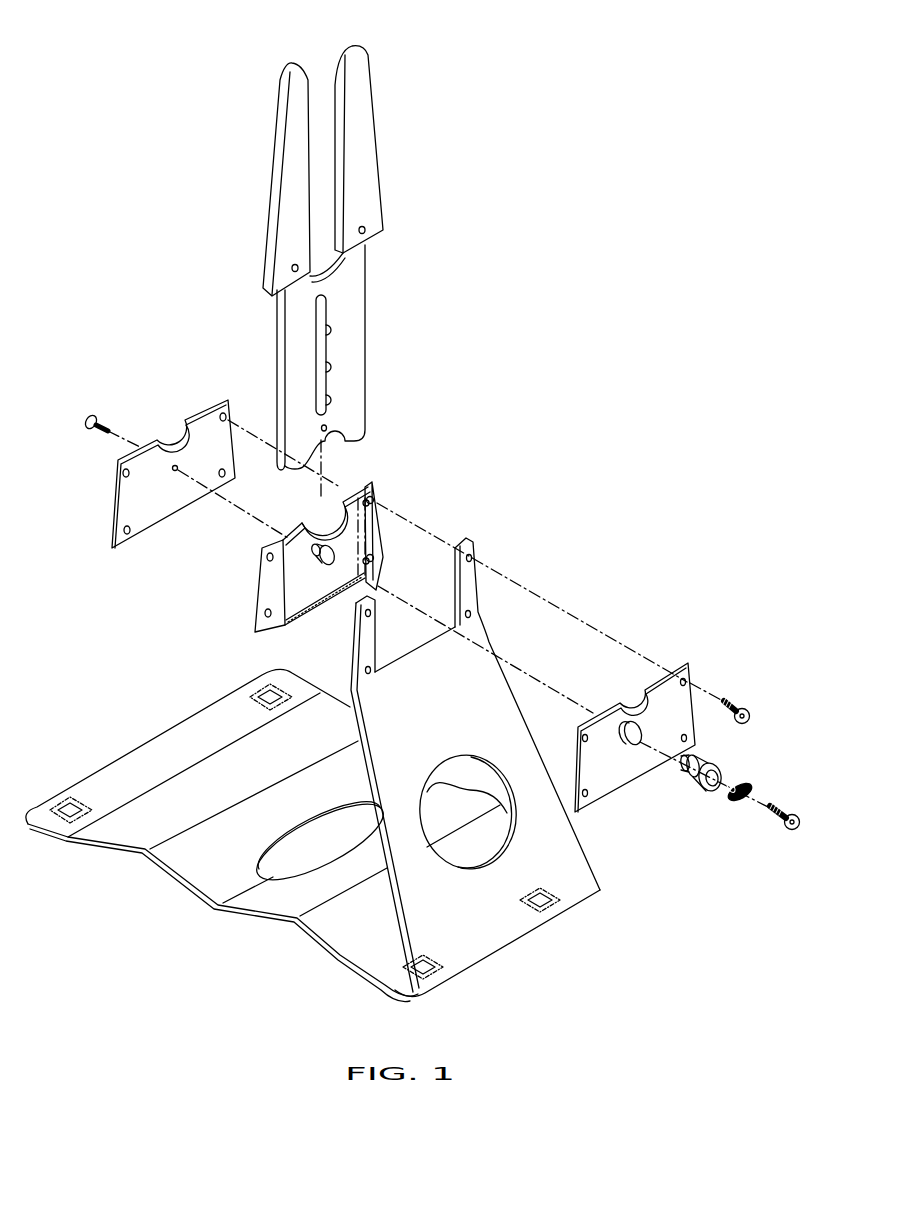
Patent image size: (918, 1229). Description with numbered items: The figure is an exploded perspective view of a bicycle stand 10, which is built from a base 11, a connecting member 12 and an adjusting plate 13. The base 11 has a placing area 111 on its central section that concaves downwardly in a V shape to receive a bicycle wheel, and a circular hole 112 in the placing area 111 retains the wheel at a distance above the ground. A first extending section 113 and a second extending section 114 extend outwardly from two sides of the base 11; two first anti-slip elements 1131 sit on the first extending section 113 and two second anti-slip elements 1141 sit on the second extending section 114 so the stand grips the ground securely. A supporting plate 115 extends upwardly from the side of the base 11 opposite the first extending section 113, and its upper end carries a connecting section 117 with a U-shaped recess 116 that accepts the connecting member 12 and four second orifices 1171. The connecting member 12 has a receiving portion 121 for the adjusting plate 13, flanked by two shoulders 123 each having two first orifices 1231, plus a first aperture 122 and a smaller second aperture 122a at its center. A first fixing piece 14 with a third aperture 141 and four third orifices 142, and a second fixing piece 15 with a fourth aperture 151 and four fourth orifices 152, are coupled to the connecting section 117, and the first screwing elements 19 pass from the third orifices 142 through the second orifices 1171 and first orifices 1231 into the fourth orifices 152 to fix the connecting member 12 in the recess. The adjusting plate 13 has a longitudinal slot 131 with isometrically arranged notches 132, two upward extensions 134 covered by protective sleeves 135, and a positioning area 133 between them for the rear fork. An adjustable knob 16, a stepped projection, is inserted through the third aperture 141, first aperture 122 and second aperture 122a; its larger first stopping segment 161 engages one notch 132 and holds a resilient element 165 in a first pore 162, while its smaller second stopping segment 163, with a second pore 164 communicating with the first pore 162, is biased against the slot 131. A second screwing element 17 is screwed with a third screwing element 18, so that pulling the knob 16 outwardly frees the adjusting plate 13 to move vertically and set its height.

The bicycle stand 10 is at (541, 452).
The base 11 is at (168, 732).
The placing area 111 is at (217, 888).
The circular hole 112 is at (327, 845).
The first extending section 113 is at (55, 825).
The first anti-slip elements 1131 is at (266, 690).
The second extending section 114 is at (403, 975).
The second anti-slip elements 1141 is at (560, 905).
The supporting plate 115 is at (488, 712).
The U-shaped recess 116 is at (415, 623).
The connecting section 117 is at (470, 585).
The second orifices 1171 is at (470, 556).
The connecting member 12 is at (300, 572).
The receiving portion 121 is at (336, 490).
The first aperture 122 is at (336, 552).
The second aperture 122a is at (292, 523).
The shoulders 123 is at (262, 580).
The first orifices 1231 is at (378, 500).
The adjusting plate 13 is at (350, 327).
The longitudinal slot 131 is at (327, 384).
The notches 132 is at (328, 400).
The positioning area 133 is at (323, 113).
The extensions 134 is at (368, 178).
The protective sleeves 135 is at (359, 149).
The first fixing piece 14 is at (665, 695).
The third aperture 141 is at (637, 713).
The third orifices 142 is at (690, 681).
The second fixing piece 15 is at (195, 410).
The fourth aperture 151 is at (176, 470).
The fourth orifices 152 is at (222, 413).
The adjustable knob 16 is at (707, 762).
The first stopping segment 161 is at (684, 786).
The first pore 162 is at (707, 790).
The second stopping segment 163 is at (682, 765).
The second pore 164 is at (683, 762).
The resilient element 165 is at (758, 784).
The second screwing element 17 is at (778, 827).
The third screwing element 18 is at (94, 412).
The first screwing elements 19 is at (740, 703).